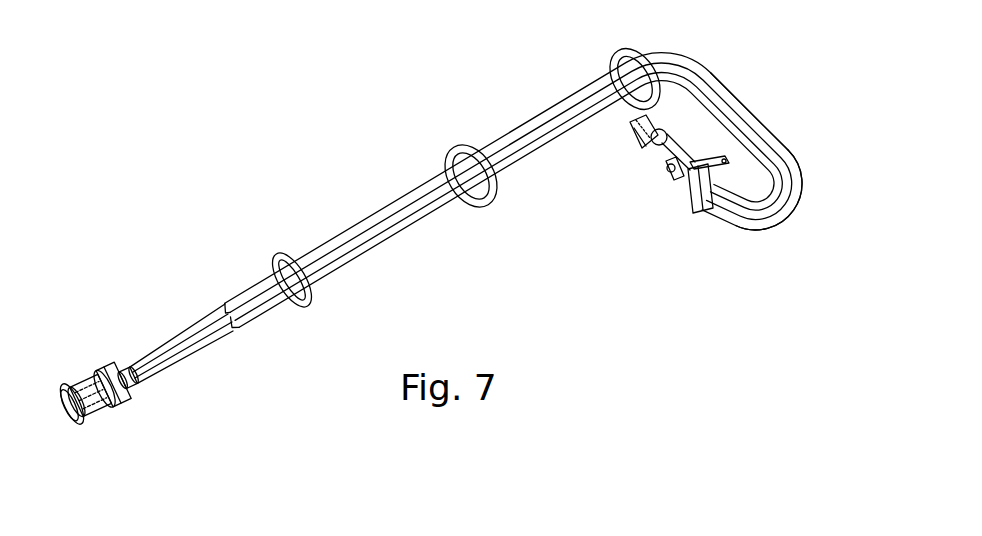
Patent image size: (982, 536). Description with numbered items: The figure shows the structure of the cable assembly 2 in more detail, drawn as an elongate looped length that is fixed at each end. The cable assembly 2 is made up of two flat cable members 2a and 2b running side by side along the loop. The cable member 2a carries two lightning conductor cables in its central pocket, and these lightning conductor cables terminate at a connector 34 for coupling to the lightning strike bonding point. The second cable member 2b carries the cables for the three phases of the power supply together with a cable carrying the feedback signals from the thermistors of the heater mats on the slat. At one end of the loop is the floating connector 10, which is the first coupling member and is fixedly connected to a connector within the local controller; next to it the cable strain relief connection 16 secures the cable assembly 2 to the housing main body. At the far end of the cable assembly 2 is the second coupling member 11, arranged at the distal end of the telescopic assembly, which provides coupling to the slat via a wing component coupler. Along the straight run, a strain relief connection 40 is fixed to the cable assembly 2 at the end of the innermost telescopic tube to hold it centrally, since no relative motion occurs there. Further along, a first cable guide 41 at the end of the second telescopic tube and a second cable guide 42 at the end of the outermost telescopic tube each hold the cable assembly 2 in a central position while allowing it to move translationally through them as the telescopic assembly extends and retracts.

The cable assembly 2 is at (738, 74).
The cable member 2a is at (793, 158).
The second cable member 2b is at (762, 138).
The floating connector 10 is at (637, 150).
The second coupling member 11 is at (86, 380).
The cable strain relief connection 16 is at (706, 210).
The connector 34 is at (671, 172).
The strain relief connection 40 is at (285, 256).
The first cable guide 41 is at (462, 149).
The second cable guide 42 is at (637, 58).